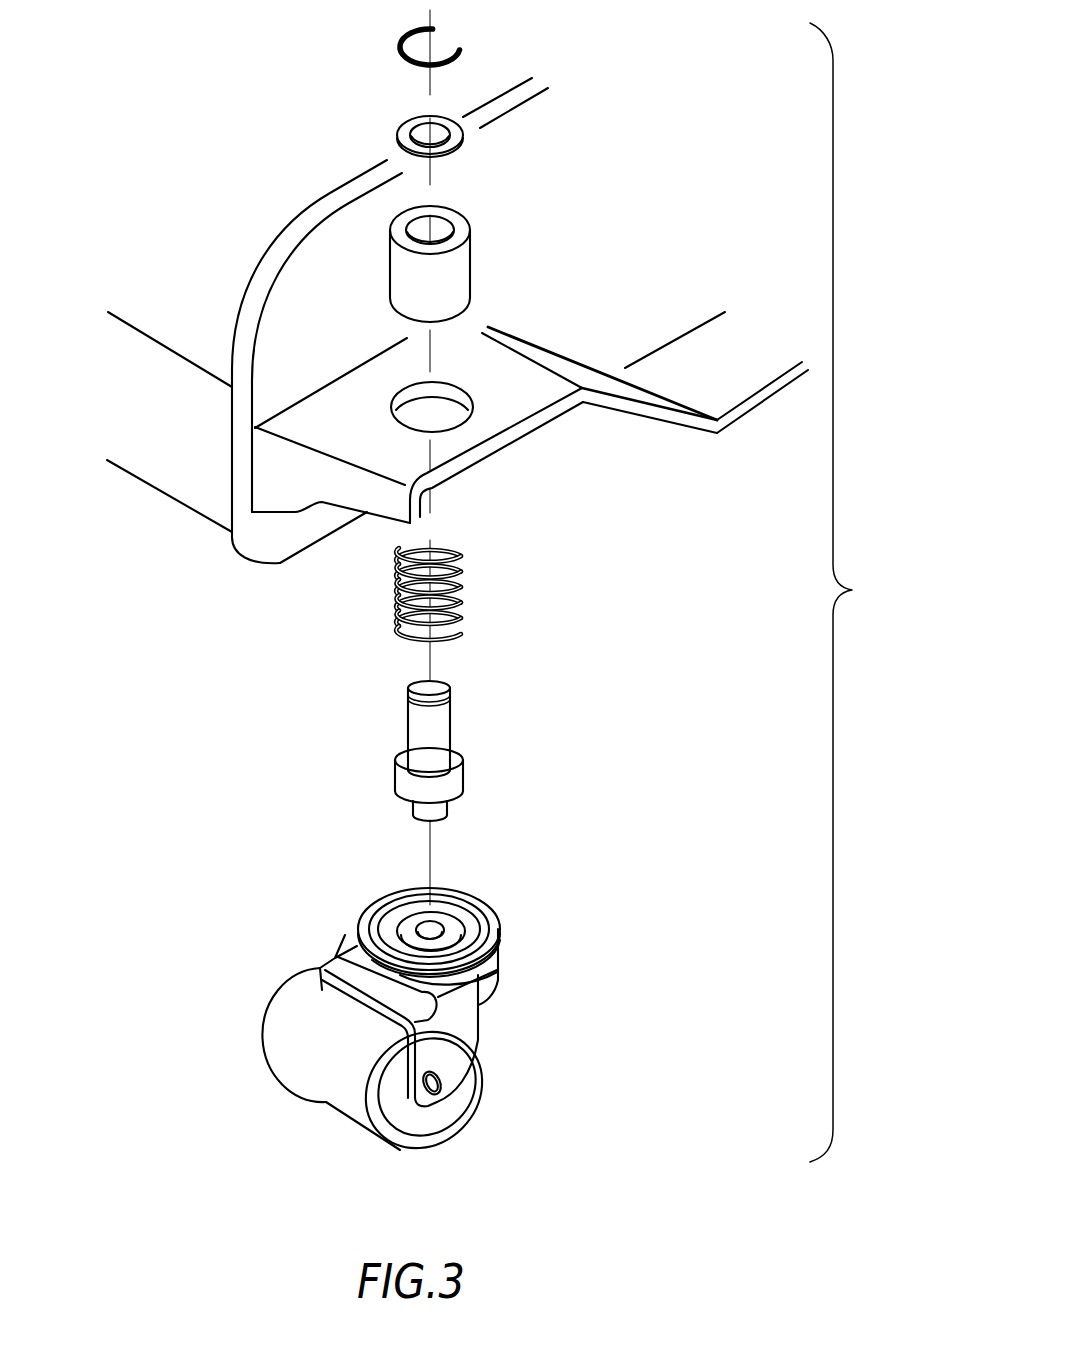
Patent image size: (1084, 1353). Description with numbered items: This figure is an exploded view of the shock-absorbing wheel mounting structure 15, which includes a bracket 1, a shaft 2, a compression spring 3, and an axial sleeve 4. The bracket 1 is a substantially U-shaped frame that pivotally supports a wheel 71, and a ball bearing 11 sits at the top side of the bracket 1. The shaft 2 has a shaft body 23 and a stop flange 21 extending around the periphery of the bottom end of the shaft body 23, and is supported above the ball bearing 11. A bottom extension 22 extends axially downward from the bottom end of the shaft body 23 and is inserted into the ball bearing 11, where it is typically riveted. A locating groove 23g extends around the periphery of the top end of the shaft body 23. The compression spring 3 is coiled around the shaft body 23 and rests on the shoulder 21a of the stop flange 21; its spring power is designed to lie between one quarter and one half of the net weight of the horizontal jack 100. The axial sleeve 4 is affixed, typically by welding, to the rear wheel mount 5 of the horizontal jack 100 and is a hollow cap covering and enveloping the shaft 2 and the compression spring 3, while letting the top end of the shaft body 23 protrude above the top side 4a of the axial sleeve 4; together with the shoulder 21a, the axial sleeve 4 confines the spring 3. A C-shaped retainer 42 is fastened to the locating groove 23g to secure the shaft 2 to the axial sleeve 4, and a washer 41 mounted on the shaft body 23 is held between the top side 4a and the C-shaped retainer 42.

The bracket 1 is at (414, 1016).
The ball bearing 11 is at (482, 938).
The wheel 71 is at (337, 1087).
The shaft 2 is at (438, 749).
The stop flange 21 is at (438, 764).
The shoulder 21a is at (457, 762).
The bottom extension 22 is at (435, 813).
The shaft body 23 is at (386, 713).
The locating groove 23g is at (396, 677).
The compression spring 3 is at (457, 600).
The axial sleeve 4 is at (479, 244).
The top side of the axial sleeve 4a is at (455, 223).
The washer 41 is at (408, 127).
The C-shaped retainer 42 is at (400, 38).
The rear wheel mount 5 is at (512, 400).
The shock-absorbing wheel mounting structure 15 is at (850, 592).
The horizontal jack 100 is at (162, 503).